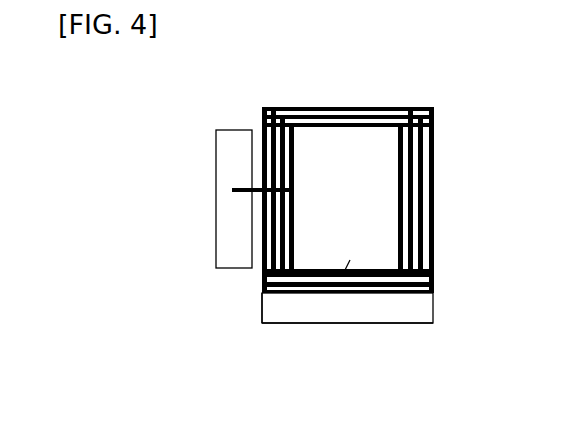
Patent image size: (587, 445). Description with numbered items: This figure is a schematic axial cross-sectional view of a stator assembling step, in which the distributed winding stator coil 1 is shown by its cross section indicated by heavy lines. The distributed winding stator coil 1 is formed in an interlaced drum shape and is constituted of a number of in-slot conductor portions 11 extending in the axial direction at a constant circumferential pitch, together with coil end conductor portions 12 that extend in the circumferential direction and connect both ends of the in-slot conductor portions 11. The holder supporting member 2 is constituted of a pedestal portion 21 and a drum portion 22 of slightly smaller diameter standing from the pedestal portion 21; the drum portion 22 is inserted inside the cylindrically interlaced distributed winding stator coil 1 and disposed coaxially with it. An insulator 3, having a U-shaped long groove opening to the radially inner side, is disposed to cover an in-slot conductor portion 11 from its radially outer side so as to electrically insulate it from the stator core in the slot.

The distributed winding stator coil 1 is at (383, 181).
The in-slot conductor portion 11 is at (446, 118).
The coil end conductor portion 12 is at (372, 109).
The holder supporting member 2 is at (325, 353).
The pedestal portion 21 is at (283, 307).
The drum portion 22 is at (337, 295).
The insulator 3 is at (232, 167).